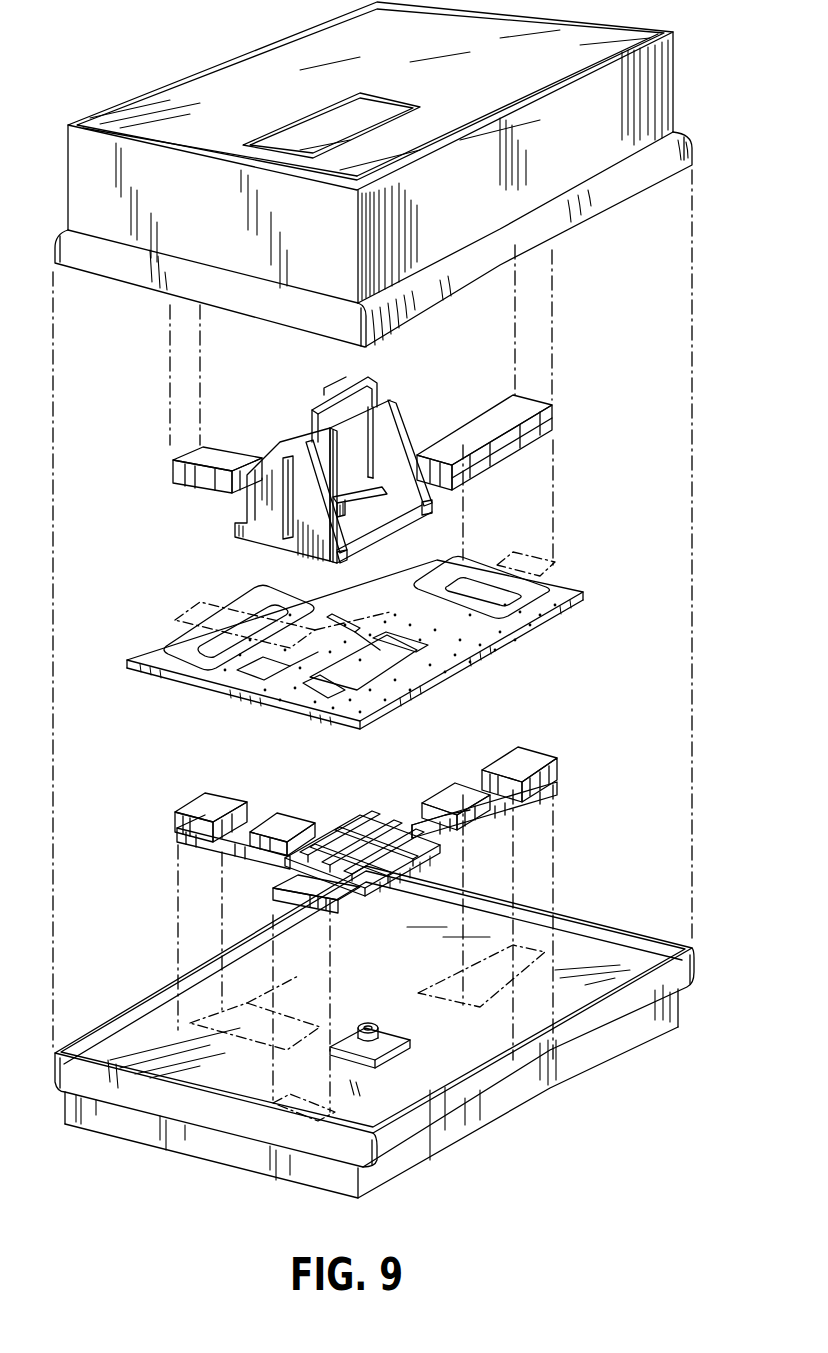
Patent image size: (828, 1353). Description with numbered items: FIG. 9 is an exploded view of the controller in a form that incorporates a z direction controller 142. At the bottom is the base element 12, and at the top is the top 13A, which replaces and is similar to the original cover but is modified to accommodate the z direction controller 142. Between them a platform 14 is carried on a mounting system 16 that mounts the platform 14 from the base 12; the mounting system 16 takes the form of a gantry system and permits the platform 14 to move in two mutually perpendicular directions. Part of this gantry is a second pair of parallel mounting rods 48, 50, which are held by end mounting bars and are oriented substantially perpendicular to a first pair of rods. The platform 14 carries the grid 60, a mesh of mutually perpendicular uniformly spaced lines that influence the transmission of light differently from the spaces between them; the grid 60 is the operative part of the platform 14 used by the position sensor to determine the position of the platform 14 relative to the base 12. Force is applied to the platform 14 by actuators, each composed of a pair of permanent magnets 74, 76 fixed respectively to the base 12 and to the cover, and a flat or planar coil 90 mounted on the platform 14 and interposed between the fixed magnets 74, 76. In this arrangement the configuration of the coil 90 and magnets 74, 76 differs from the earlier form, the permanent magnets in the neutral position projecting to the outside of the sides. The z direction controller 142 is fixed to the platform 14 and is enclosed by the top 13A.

The top 13A is at (180, 87).
The permanent magnet 76 is at (172, 470).
The z direction controller 142 is at (292, 436).
The platform 14 is at (565, 583).
The coil 90 is at (257, 604).
The grid 60 is at (432, 677).
The mounting system 16 is at (270, 875).
The permanent magnet 74 is at (221, 790).
The mounting rod 48 is at (357, 818).
The mounting rod 50 is at (328, 833).
The base element 12 is at (533, 1103).